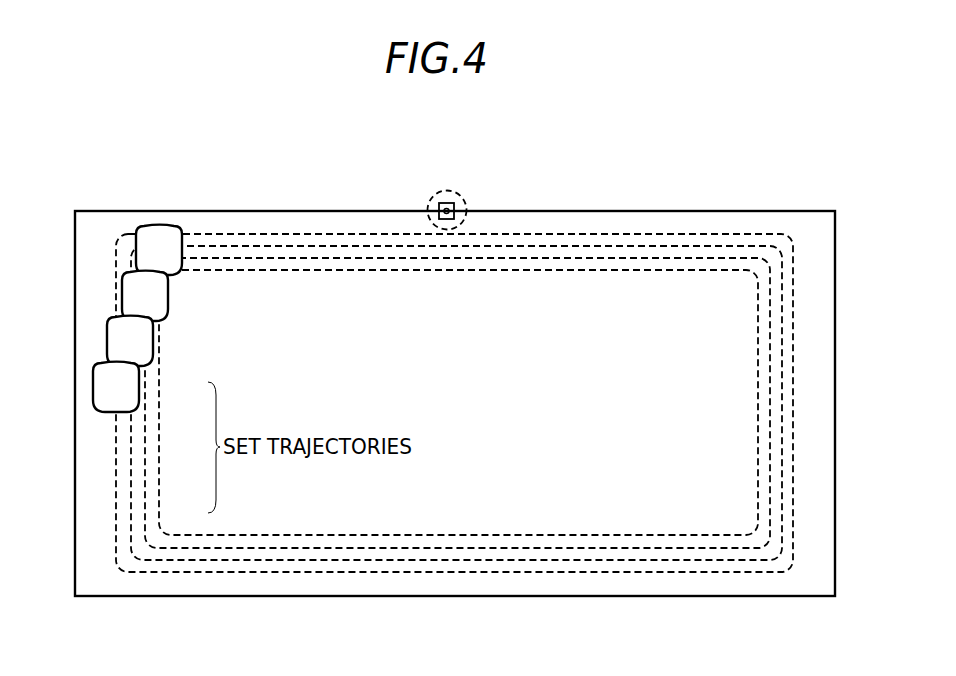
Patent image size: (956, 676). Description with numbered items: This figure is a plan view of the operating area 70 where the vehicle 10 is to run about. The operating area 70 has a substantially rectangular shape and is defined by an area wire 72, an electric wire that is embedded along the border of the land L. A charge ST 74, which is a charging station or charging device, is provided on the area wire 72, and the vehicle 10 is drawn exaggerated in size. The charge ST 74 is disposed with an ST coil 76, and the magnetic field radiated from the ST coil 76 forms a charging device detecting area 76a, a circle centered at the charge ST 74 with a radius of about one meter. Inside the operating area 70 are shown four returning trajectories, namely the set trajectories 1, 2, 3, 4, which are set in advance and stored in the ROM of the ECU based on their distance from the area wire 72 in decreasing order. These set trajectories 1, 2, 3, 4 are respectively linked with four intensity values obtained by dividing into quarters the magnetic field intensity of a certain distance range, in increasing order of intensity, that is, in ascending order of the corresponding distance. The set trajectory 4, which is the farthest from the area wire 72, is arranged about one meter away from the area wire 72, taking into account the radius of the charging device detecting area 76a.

The land L is at (304, 160).
The operating area 70 is at (455, 389).
The area wire 72 is at (225, 210).
The set trajectory 1 is at (118, 513).
The set trajectory 2 is at (135, 473).
The set trajectory 3 is at (147, 435).
The set trajectory 4 is at (160, 394).
The vehicle 10 is at (95, 363).
The charge ST 74 is at (454, 190).
The ST coil 76 is at (439, 207).
The charging device detecting area 76a is at (437, 196).